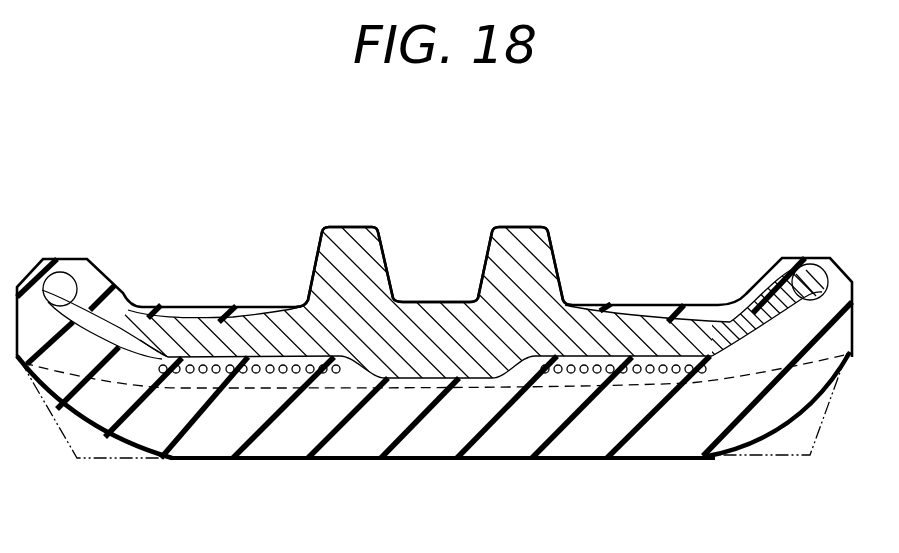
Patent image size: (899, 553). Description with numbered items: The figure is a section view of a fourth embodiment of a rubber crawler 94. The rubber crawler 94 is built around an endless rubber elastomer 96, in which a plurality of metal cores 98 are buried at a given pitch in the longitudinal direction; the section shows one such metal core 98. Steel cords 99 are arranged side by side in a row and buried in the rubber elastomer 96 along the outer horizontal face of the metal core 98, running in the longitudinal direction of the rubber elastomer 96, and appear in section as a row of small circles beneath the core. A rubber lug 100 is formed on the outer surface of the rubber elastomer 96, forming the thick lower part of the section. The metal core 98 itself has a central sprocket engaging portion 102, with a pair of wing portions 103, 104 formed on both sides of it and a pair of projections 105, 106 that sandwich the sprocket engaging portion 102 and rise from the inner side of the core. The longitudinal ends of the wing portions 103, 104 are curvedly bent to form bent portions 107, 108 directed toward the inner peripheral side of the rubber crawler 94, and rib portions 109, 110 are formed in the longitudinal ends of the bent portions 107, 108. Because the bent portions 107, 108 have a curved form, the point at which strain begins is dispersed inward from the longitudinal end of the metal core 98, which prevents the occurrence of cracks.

The rubber crawler 94 is at (647, 457).
The rubber elastomer 96 is at (650, 305).
The metal core 98 is at (360, 243).
The steel cords 99 is at (265, 374).
The rubber lug 100 is at (430, 445).
The sprocket engaging portion 102 is at (430, 301).
The wing portion 103 is at (683, 340).
The wing portion 104 is at (201, 340).
The projection 105 is at (522, 232).
The projection 106 is at (362, 237).
The bent portion 107 is at (773, 317).
The bent portion 108 is at (127, 287).
The rib portion 109 is at (813, 276).
The rib portion 110 is at (75, 273).